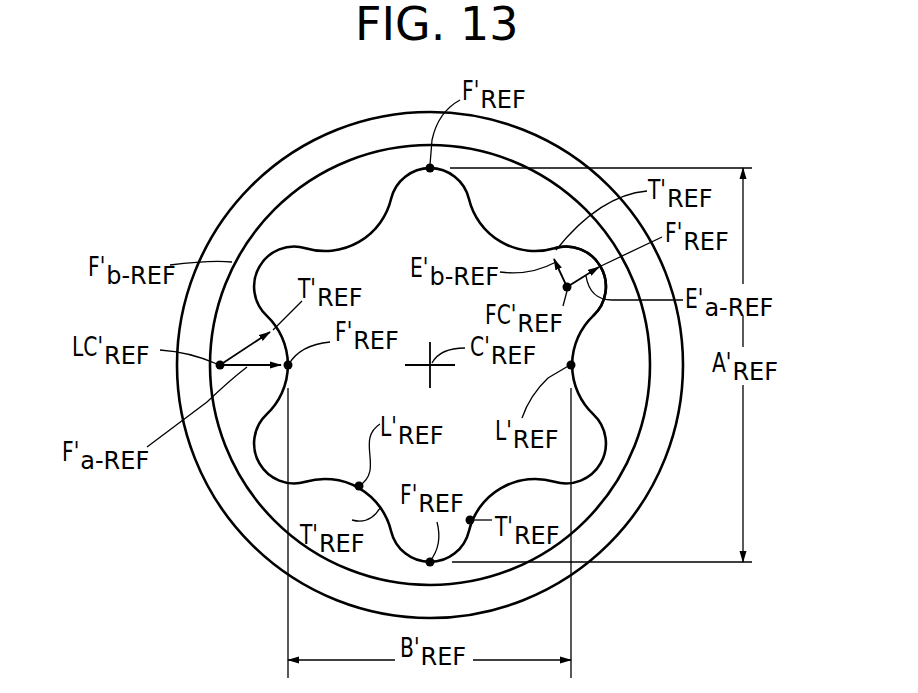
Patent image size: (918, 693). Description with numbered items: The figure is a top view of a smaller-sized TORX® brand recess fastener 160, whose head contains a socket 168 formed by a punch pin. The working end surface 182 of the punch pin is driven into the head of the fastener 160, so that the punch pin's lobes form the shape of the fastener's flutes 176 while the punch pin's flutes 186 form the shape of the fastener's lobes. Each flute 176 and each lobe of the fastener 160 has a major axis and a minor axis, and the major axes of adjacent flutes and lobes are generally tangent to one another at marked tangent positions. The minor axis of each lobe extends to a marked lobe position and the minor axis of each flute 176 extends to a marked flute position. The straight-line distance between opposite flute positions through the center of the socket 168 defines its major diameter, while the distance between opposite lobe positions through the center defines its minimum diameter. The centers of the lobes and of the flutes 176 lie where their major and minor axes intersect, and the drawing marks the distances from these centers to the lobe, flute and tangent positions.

The recess fastener 160 is at (574, 148).
The socket 168 is at (330, 430).
The flutes 176 is at (257, 263).
The working end surface 182 is at (377, 262).
The flutes of the punch pin 186 is at (552, 252).